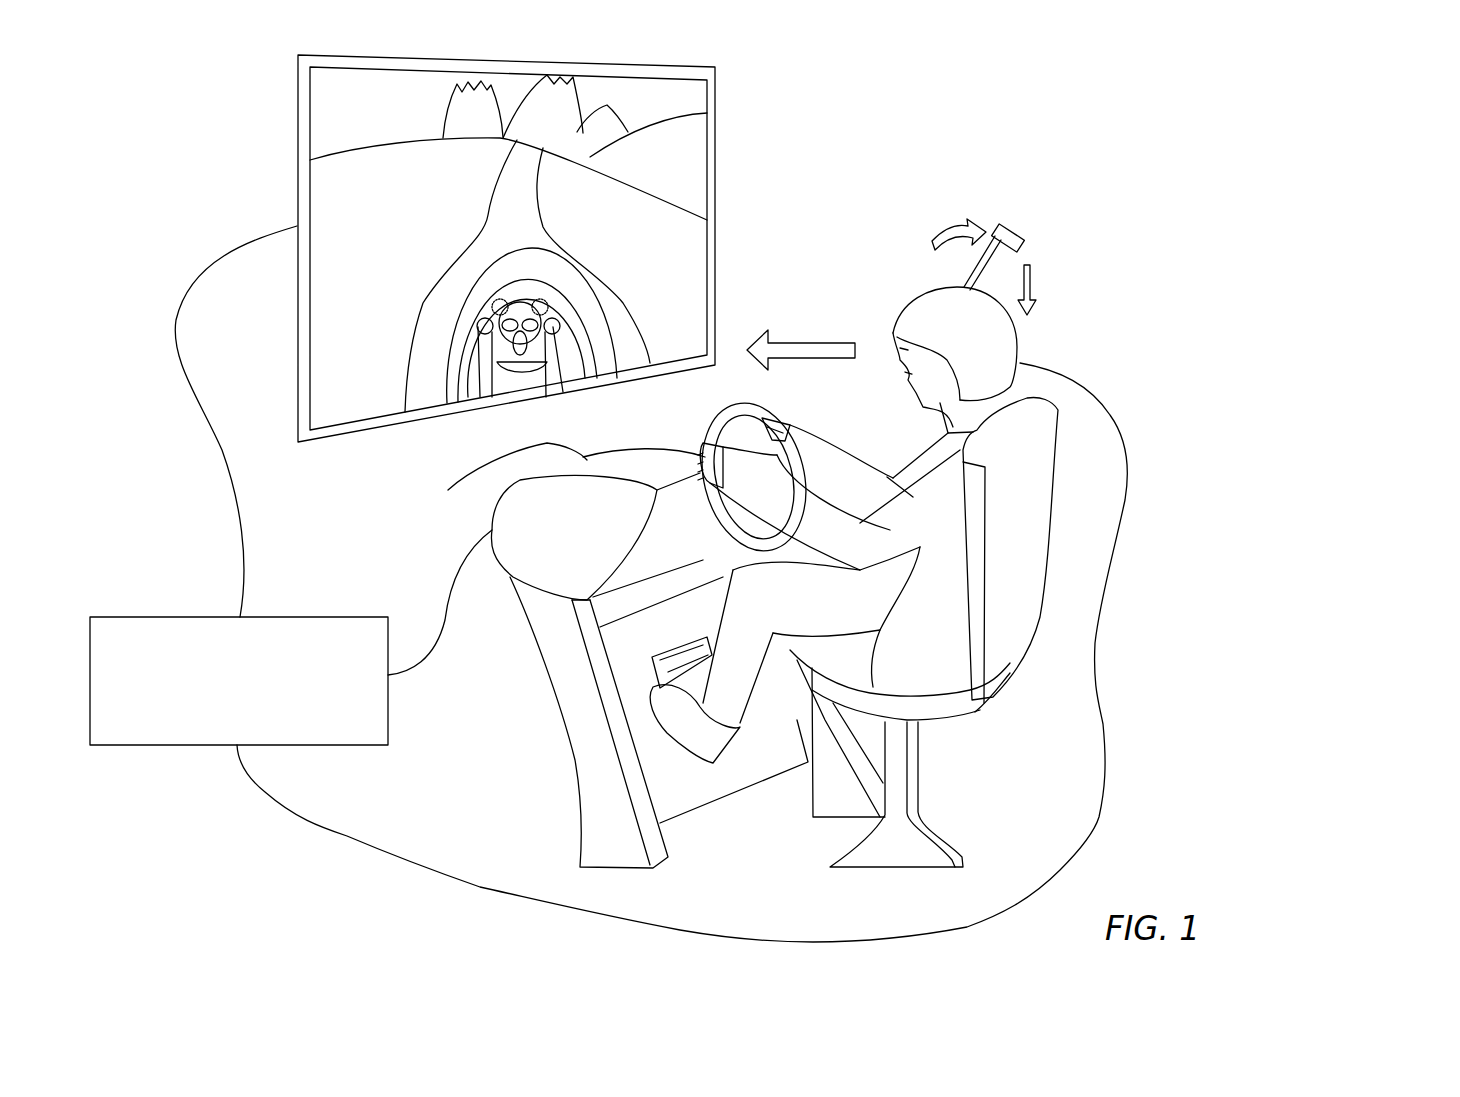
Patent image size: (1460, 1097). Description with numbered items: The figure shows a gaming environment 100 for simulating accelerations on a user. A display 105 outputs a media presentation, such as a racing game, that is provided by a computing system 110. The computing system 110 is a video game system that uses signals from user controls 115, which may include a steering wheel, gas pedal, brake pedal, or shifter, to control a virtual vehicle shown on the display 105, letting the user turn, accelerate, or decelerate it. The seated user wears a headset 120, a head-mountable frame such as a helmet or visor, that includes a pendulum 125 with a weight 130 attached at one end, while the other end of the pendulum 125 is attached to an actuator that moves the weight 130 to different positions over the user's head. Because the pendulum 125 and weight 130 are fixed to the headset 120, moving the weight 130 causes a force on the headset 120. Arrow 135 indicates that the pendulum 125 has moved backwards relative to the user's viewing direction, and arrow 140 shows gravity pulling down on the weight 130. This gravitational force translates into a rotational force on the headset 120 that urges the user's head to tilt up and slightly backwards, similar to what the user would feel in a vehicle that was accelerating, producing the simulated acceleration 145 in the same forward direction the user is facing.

The gaming environment 100 is at (1168, 113).
The display 105 is at (298, 145).
The computing system 110 is at (258, 706).
The user controls 115 is at (448, 490).
The headset 120 is at (1020, 345).
The pendulum 125 is at (1017, 257).
The weight 130 is at (1012, 218).
The arrow 135 is at (932, 243).
The arrow 140 is at (1033, 283).
The simulated acceleration 145 is at (790, 343).